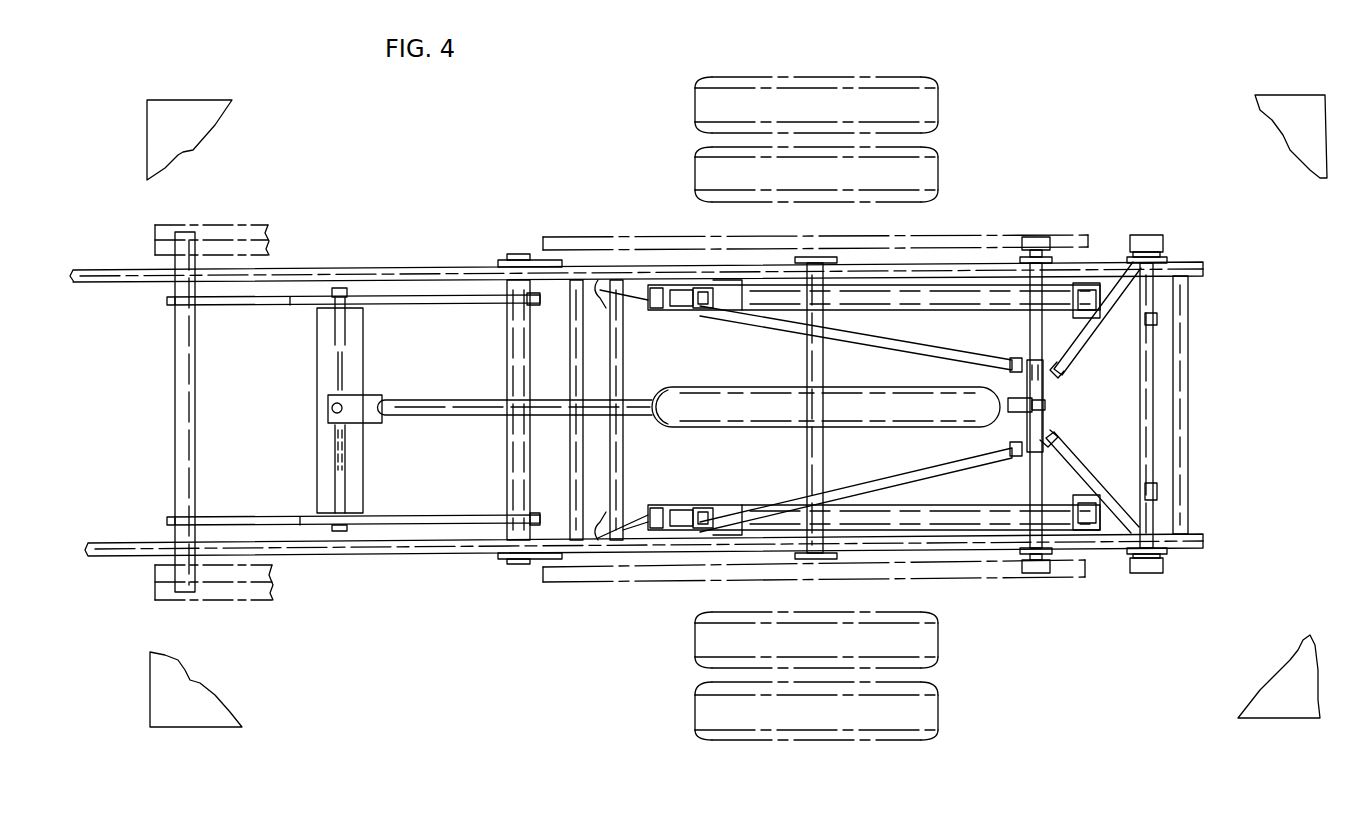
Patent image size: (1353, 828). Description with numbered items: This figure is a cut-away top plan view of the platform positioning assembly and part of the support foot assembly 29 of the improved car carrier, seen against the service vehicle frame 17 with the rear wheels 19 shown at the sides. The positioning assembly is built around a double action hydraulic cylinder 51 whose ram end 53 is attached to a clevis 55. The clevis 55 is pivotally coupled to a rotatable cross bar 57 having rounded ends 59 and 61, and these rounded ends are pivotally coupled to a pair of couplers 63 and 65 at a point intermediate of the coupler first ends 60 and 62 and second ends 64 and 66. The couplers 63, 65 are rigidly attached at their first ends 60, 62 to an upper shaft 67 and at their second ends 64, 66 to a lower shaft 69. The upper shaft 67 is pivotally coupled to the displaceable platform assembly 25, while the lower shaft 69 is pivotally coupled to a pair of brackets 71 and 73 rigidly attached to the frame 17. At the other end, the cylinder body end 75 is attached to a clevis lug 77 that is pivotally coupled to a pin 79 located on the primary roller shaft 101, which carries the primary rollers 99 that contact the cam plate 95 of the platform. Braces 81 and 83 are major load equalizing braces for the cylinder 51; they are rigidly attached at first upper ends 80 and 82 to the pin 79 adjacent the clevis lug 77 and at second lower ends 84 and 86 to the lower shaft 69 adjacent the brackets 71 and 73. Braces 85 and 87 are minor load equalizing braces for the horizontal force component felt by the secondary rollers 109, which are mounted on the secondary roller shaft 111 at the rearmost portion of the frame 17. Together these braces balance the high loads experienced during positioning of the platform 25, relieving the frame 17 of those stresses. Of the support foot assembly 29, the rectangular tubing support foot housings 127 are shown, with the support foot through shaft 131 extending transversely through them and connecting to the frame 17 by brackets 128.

The service vehicle frame 17 is at (362, 270).
The rear wheels 19 is at (942, 160).
The displaceable platform assembly 25 is at (196, 124).
The support foot assembly 29 is at (929, 307).
The double action hydraulic cylinder 51 is at (728, 388).
The ram end 53 is at (400, 403).
The clevis 55 is at (365, 395).
The rotatable cross bar 57 is at (317, 361).
The rounded end 59 is at (345, 532).
The coupler first end 60 is at (167, 519).
The rounded end 61 is at (338, 287).
The coupler first end 62 is at (167, 300).
The coupler 63 is at (301, 526).
The coupler second end 64 is at (536, 514).
The coupler 65 is at (291, 297).
The coupler second end 66 is at (536, 304).
The upper shaft 67 is at (175, 393).
The lower shaft 69 is at (507, 451).
The bracket 71 is at (515, 561).
The bracket 73 is at (513, 258).
The body end 75 is at (1008, 405).
The clevis lug 77 is at (1045, 407).
The pin 79 is at (1043, 392).
The first upper end 80 is at (1022, 448).
The brace 81 is at (878, 464).
The first upper end 82 is at (1020, 358).
The brace 83 is at (880, 348).
The second lower end 84 is at (610, 522).
The brace 85 is at (1095, 479).
The second lower end 86 is at (608, 299).
The brace 87 is at (1092, 336).
The cam plate 95 is at (941, 240).
The primary rollers 99 is at (1036, 237).
The primary roller shaft 101 is at (1043, 297).
The secondary rollers 109 is at (1153, 237).
The secondary roller shaft 111 is at (1140, 441).
The support foot housing 127 is at (870, 308).
The brackets 128 is at (812, 256).
The support foot through shaft 131 is at (807, 350).